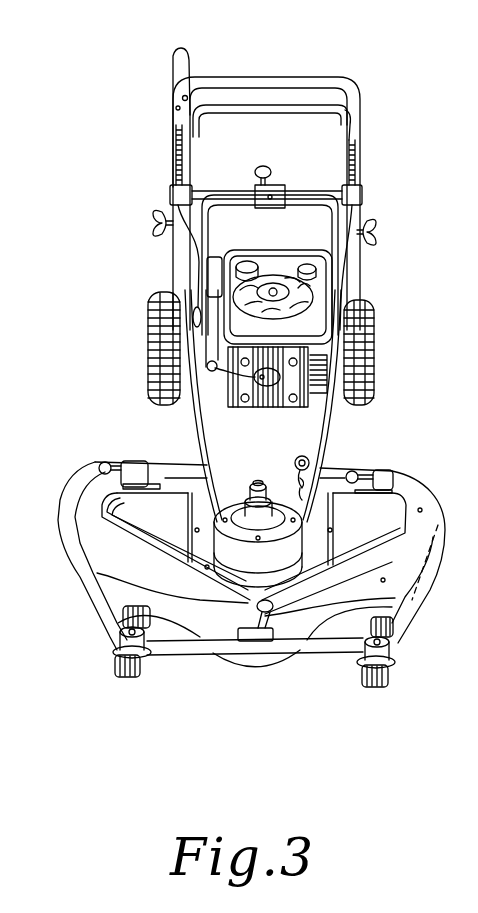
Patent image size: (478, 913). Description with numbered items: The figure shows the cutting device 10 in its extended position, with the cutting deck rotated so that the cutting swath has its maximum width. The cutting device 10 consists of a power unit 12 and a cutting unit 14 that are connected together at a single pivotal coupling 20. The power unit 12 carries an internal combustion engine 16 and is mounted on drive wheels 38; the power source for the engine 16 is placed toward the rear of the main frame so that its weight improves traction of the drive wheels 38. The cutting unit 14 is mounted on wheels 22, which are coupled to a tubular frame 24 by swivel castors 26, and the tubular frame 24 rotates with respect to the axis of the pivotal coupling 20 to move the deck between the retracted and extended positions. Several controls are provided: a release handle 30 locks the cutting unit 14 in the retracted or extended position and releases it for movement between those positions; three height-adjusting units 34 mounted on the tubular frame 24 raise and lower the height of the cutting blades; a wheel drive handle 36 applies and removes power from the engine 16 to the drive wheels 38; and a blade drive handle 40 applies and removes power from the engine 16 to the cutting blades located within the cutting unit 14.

The cutting device 10 is at (279, 72).
The power unit 12 is at (335, 461).
The cutting unit 14 is at (435, 510).
The internal combustion engine 16 is at (247, 255).
The pivotal coupling 20 is at (257, 486).
The wheels 22 is at (138, 685).
The tubular frame 24 is at (83, 567).
The swivel castors 26 is at (120, 655).
The release handle 30 is at (297, 456).
The height-adjusting units 34 is at (124, 462).
The wheel drive handle 36 is at (175, 78).
The drive wheels 38 is at (148, 350).
The blade drive handle 40 is at (276, 107).